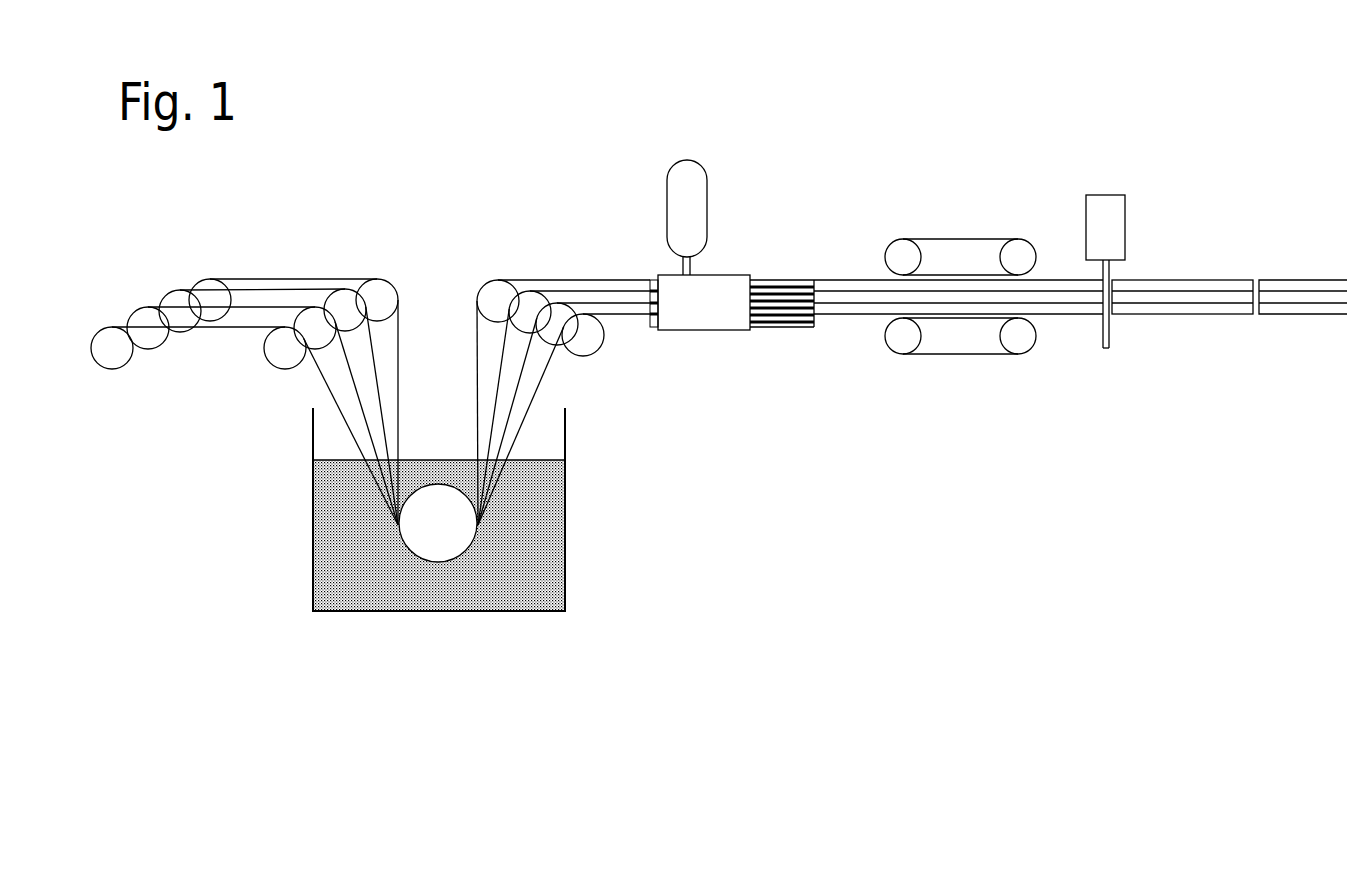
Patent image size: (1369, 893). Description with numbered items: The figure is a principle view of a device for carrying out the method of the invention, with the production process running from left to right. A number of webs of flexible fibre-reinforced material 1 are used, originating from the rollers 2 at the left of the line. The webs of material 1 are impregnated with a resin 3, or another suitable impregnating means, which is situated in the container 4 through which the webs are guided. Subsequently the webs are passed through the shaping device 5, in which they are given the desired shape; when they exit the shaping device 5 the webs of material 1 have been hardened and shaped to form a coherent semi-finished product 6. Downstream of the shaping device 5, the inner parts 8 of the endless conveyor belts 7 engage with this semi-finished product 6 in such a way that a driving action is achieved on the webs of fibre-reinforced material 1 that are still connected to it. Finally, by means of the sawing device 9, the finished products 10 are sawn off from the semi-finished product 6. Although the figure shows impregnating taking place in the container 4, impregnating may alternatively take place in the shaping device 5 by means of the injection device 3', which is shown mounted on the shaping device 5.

The webs of flexible fibre-reinforced material 1 is at (276, 250).
The rollers 2 is at (172, 302).
The resin 3 is at (461, 535).
The injection device 3' is at (699, 200).
The container 4 is at (565, 531).
The shaping device 5 is at (733, 260).
The semi-finished product 6 is at (850, 297).
The endless conveyor belts 7 is at (948, 263).
The inner parts 8 is at (917, 307).
The sawing device 9 is at (1107, 212).
The finished products 10 is at (1173, 285).